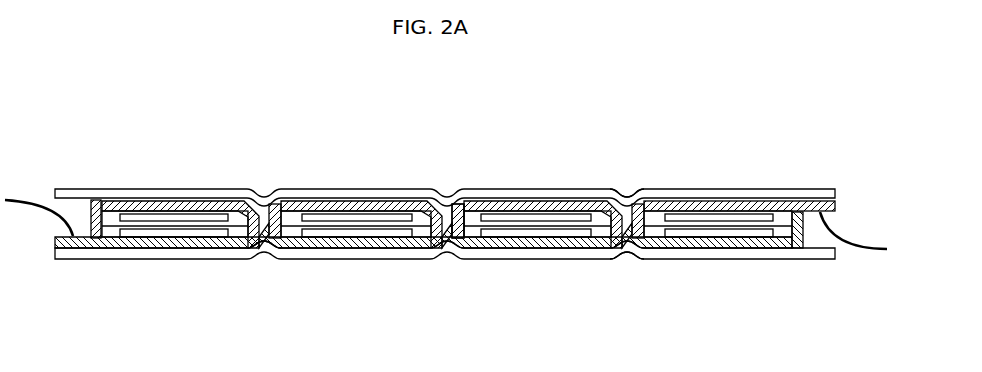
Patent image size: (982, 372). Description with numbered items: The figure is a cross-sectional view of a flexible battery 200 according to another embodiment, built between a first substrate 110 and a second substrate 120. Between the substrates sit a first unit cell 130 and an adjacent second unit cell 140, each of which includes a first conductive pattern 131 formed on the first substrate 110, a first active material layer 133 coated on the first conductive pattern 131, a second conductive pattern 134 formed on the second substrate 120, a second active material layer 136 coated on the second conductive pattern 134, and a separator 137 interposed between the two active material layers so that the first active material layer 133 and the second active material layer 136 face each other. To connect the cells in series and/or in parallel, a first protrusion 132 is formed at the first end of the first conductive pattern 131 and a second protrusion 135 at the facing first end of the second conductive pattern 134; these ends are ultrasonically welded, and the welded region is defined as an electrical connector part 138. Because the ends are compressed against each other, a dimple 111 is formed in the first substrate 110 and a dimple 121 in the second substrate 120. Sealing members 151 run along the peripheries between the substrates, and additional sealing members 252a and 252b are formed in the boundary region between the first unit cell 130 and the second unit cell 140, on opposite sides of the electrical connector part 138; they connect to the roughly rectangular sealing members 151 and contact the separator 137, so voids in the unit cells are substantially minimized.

The flexible battery 200 is at (856, 140).
The first substrate 110 is at (836, 193).
The dimple 111 is at (626, 190).
The second substrate 120 is at (836, 251).
The dimple 121 is at (626, 257).
The first unit cell 130 is at (102, 259).
The second unit cell 140 is at (268, 259).
The first conductive pattern 131 is at (106, 214).
The first protrusion 132 is at (268, 217).
The first active material layer 133 is at (161, 219).
The second conductive pattern 134 is at (132, 229).
The second protrusion 135 is at (297, 212).
The second active material layer 136 is at (193, 225).
The separator 137 is at (224, 225).
The electrical connector part 138 is at (470, 225).
The sealing member 151 is at (88, 222).
The sealing member 252a is at (254, 259).
The sealing member 252b is at (286, 246).